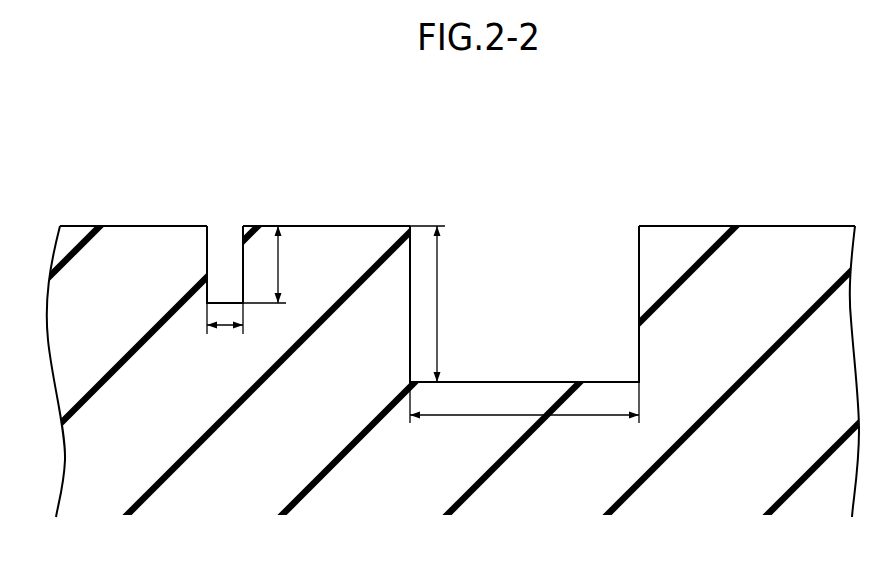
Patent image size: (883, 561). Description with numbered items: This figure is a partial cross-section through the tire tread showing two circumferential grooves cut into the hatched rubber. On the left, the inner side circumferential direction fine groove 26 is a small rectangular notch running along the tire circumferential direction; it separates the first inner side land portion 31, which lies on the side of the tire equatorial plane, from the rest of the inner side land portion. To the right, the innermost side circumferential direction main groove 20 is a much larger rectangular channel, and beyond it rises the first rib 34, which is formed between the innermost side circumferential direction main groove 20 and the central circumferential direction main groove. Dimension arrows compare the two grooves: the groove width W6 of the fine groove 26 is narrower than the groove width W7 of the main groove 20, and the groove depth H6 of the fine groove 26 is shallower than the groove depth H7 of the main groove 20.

The inner side circumferential direction fine groove 26 is at (208, 250).
The first inner side land portion 31 is at (342, 226).
The innermost side circumferential direction main groove 20 is at (638, 287).
The first rib 34 is at (755, 226).
The groove depth of the inner side circumferential direction fine groove H6 is at (279, 265).
The groove width of the inner side circumferential direction fine groove W6 is at (222, 327).
The groove depth of the innermost side circumferential direction main groove H7 is at (438, 302).
The groove width of the innermost side circumferential direction main groove W7 is at (477, 417).